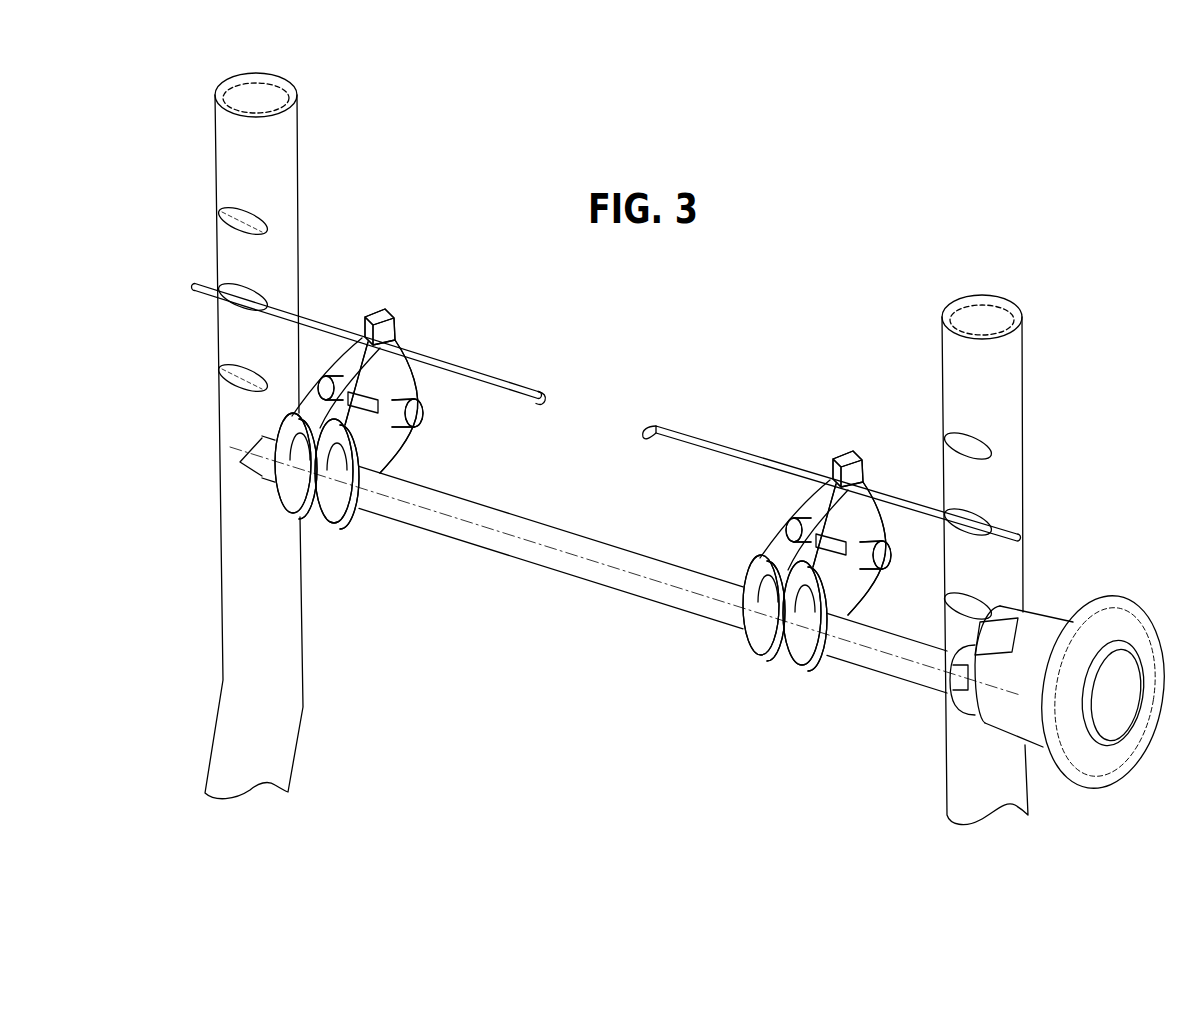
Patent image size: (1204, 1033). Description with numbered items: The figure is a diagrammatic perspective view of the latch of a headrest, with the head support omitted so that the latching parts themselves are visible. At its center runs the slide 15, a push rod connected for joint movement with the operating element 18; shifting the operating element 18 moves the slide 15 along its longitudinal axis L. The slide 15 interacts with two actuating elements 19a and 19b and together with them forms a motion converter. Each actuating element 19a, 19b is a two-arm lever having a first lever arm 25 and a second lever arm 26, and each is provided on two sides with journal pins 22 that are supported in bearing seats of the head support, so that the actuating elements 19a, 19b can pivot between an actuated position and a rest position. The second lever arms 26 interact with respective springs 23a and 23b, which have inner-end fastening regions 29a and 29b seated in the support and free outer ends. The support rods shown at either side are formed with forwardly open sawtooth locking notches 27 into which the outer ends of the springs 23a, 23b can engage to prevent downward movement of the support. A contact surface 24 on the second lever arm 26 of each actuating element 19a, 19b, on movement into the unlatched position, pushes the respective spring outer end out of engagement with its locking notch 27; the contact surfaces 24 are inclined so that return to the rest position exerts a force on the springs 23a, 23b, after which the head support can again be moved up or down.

The slide 15 is at (548, 560).
The longitudinal axis L is at (643, 578).
The operating element 18 is at (1110, 712).
The actuating element 19a is at (852, 590).
The actuating element 19b is at (388, 452).
The journal pins 22 is at (326, 376).
The spring 23a is at (710, 436).
The spring 23b is at (497, 378).
The contact surface 24 is at (393, 362).
The first lever arm 25 is at (346, 536).
The second lever arm 26 is at (380, 312).
The locking notches 27 is at (230, 216).
The inner-end fastening region 29a is at (548, 386).
The inner-end fastening region 29b is at (655, 422).